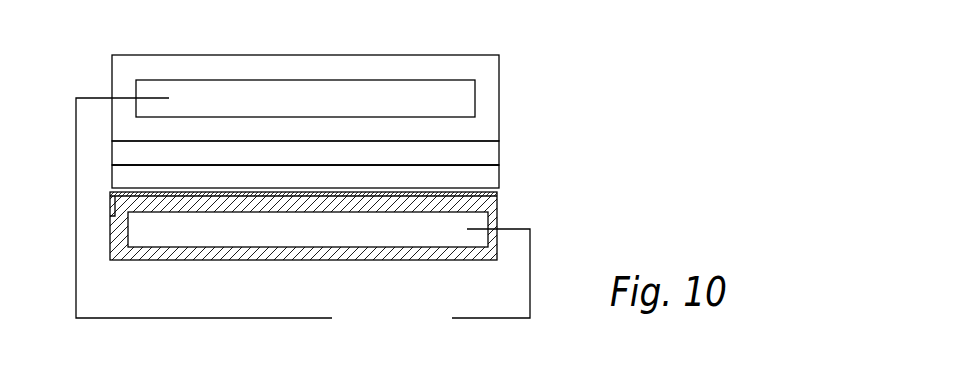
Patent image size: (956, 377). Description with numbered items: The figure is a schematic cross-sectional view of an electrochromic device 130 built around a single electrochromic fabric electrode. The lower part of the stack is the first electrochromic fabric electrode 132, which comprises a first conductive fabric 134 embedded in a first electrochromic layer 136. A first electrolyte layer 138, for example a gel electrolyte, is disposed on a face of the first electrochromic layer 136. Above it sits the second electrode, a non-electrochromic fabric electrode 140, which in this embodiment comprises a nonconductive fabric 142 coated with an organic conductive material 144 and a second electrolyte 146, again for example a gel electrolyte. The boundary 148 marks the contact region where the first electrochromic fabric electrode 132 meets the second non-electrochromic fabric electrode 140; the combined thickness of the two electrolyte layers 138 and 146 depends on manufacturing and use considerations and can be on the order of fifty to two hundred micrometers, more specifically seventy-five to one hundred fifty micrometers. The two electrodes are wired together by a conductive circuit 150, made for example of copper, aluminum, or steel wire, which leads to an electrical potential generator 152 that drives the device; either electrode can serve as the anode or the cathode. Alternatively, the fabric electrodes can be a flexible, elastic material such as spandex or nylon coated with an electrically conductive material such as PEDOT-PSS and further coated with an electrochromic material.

The electrochromic device 130 is at (650, 55).
The first electrochromic fabric electrode 132 is at (585, 168).
The first conductive fabric 134 is at (393, 228).
The first electrochromic layer 136 is at (191, 262).
The first electrolyte layer 138 is at (483, 180).
The non-electrochromic fabric electrode 140 is at (585, 55).
The nonconductive fabric 142 is at (410, 100).
The organic conductive material 144 is at (484, 99).
The second electrolyte 146 is at (252, 154).
The boundary 148 is at (302, 165).
The conductive circuit 150 is at (76, 231).
The electrical potential generator 152 is at (370, 338).